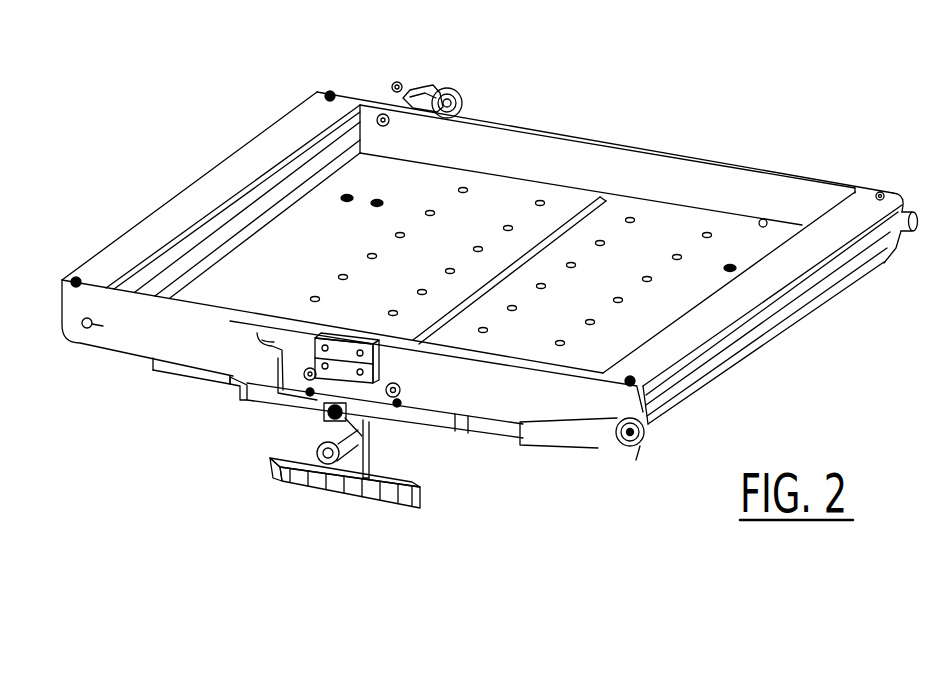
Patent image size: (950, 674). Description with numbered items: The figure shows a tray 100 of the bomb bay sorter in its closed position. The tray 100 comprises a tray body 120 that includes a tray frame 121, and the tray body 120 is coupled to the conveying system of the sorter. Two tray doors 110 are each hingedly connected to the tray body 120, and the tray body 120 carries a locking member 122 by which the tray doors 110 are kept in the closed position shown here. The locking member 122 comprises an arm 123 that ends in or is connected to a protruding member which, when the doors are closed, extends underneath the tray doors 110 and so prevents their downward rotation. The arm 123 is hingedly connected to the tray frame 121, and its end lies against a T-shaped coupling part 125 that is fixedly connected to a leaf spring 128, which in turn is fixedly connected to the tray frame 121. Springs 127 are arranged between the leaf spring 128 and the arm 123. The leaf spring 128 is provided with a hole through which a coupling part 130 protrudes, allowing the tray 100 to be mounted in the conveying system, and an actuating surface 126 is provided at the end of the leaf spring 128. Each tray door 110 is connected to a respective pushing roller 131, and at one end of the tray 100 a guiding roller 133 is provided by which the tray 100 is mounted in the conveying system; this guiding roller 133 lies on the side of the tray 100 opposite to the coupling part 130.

The tray 100 is at (470, 340).
The tray doors 110 is at (497, 208).
The tray body 120 is at (475, 292).
The tray frame 121 is at (627, 147).
The locking member 122 is at (341, 462).
The arm 123 is at (182, 375).
The T-shaped coupling part 125 is at (322, 407).
The actuating surface 126 is at (277, 475).
The springs 127 is at (257, 333).
The leaf spring 128 is at (360, 386).
The coupling part 130 is at (357, 432).
The pushing roller 131 is at (640, 437).
The guiding roller 133 is at (465, 95).